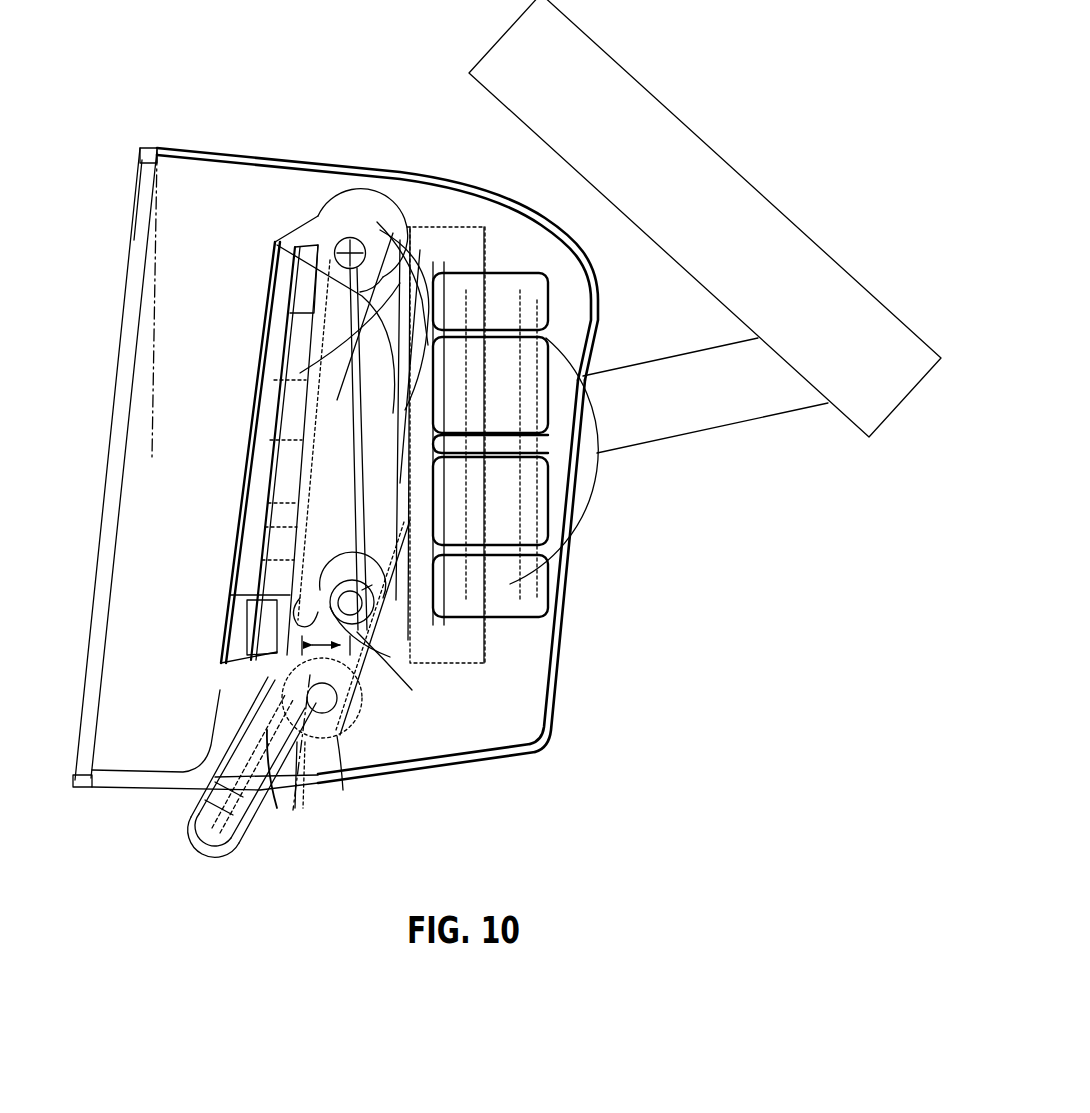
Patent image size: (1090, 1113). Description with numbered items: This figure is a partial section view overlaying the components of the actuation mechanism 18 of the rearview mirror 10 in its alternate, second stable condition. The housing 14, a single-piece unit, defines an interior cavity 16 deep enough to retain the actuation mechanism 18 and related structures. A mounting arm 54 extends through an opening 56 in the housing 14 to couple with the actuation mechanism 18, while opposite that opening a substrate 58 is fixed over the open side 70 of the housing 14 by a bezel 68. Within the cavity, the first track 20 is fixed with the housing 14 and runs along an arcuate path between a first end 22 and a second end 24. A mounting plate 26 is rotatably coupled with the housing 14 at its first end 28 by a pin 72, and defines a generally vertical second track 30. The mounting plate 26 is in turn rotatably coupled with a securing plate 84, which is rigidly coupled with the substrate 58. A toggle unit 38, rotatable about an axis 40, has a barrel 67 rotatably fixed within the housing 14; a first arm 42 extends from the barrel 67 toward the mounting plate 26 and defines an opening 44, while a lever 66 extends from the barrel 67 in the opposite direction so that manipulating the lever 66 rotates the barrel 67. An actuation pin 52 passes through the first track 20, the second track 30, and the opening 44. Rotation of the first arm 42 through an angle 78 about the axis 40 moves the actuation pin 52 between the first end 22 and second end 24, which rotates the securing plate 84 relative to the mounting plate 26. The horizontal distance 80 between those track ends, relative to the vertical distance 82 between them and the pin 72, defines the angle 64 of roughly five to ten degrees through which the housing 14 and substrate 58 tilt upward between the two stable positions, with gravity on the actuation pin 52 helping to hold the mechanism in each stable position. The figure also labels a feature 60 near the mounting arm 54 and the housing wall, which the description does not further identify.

The rearview mirror 10 is at (167, 82).
The housing 14 is at (297, 163).
The interior cavity 16 is at (135, 522).
The actuation mechanism 18 is at (257, 268).
The first track 20 is at (305, 597).
The first end 22 is at (300, 637).
The second end 24 is at (357, 632).
The mounting plate 26 is at (423, 232).
The first end 28 is at (350, 236).
The second track 30 is at (345, 583).
The toggle unit 38 is at (372, 742).
The axis 40 is at (323, 699).
The first arm 42 is at (367, 673).
The opening 44 is at (350, 587).
The actuation pin 52 is at (357, 600).
The mounting arm 54 is at (700, 416).
The opening 56 is at (568, 540).
The substrate 58 is at (137, 230).
The clip 60 is at (548, 392).
The angle 64 is at (150, 280).
The lever 66 is at (205, 833).
The barrel 67 is at (338, 742).
The bezel 68 is at (148, 150).
The open side 70 is at (73, 786).
The pin 72 is at (356, 237).
The angle 78 is at (277, 806).
The distance 80 is at (290, 680).
The vertical distance 82 is at (415, 260).
The securing plate 84 is at (247, 450).